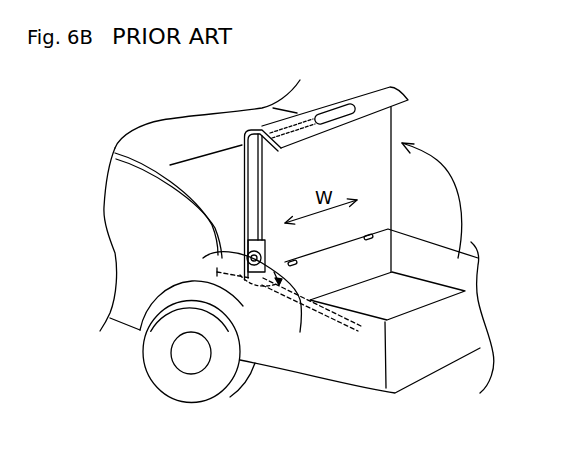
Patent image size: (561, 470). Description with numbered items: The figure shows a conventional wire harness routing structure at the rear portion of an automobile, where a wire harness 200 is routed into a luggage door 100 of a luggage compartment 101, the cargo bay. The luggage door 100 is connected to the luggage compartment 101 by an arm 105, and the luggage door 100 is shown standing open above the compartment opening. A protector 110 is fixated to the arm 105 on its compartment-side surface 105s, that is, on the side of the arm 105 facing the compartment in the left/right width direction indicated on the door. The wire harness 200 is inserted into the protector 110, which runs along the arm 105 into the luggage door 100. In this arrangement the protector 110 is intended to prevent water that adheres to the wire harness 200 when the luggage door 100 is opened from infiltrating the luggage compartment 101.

The luggage door 100 is at (377, 133).
The luggage compartment 101 is at (417, 298).
The arm 105 is at (140, 329).
The compartment-side surface 105s is at (220, 262).
The protector 110 is at (300, 332).
The wire harness 200 is at (250, 173).